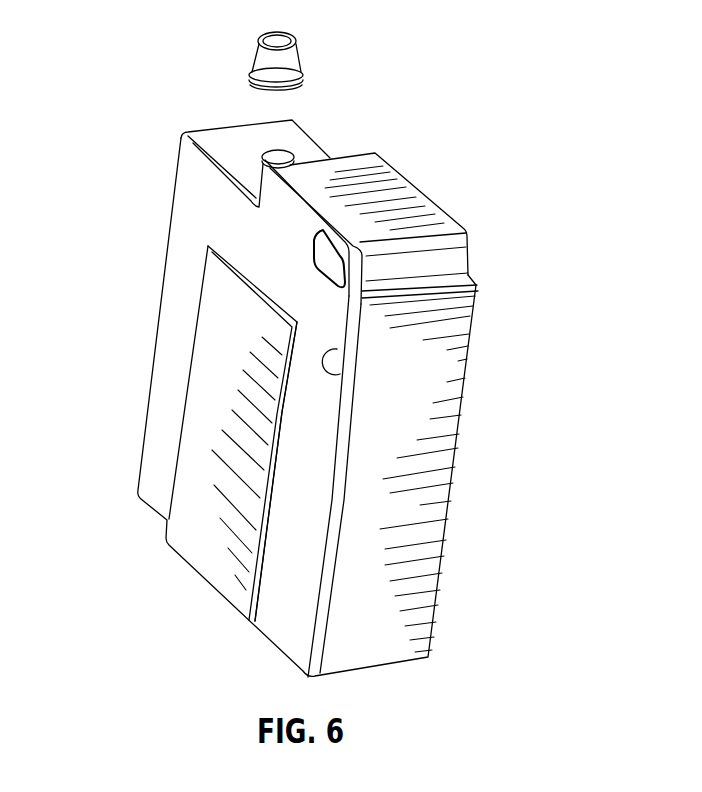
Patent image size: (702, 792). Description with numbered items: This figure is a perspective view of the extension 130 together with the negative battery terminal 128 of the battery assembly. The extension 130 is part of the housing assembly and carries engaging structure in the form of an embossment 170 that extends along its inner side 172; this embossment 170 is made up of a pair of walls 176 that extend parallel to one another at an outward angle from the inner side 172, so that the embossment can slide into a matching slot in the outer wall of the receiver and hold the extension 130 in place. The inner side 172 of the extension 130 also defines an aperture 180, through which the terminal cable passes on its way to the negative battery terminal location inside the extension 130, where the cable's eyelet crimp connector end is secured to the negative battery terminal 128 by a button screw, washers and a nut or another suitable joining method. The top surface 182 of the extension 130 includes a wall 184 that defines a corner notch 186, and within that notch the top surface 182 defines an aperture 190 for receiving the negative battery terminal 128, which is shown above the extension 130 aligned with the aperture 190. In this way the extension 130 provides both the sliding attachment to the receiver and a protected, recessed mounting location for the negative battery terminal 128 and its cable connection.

The negative battery terminal 128 is at (287, 30).
The extension 130 is at (457, 427).
The embossment 170 is at (217, 316).
The inner side 172 is at (343, 375).
The walls 176 is at (180, 435).
The aperture 180 is at (327, 257).
The top surface 182 is at (382, 181).
The wall 184 is at (258, 187).
The corner notch 186 is at (277, 137).
The aperture 190 is at (290, 147).